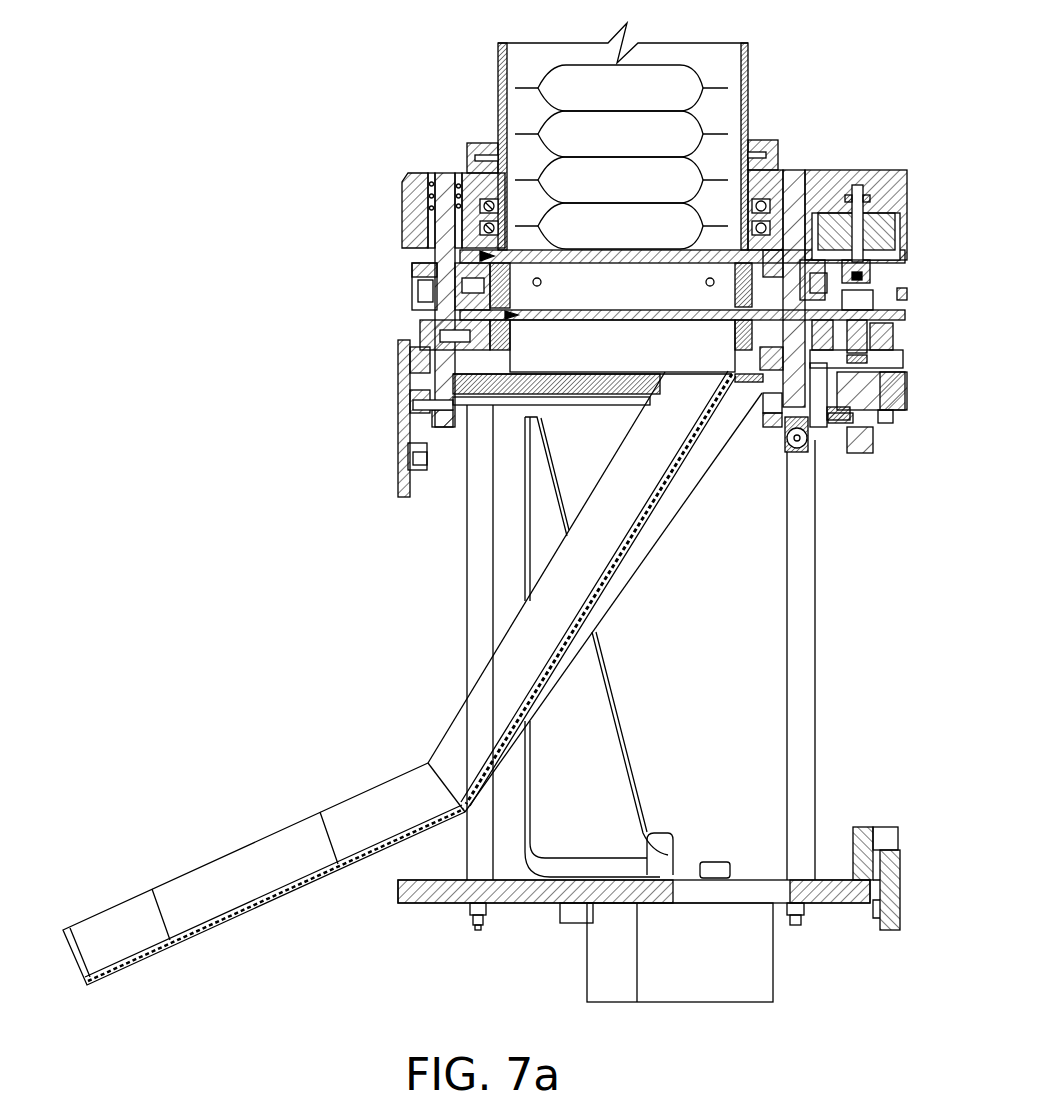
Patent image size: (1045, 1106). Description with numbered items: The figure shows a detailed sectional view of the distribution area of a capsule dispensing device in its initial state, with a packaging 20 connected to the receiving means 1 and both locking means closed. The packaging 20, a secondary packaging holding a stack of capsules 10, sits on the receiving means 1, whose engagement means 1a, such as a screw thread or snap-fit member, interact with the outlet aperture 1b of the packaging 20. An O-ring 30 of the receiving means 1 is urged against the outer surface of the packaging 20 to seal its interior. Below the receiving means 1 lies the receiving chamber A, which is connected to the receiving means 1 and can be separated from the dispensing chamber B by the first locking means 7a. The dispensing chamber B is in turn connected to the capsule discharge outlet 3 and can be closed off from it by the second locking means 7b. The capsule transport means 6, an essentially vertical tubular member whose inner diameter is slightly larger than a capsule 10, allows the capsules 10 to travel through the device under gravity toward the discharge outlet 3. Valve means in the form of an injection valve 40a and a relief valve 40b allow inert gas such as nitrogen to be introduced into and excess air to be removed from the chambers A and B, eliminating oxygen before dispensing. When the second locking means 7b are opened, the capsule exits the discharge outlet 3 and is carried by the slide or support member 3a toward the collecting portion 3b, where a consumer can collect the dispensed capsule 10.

The capsule 10 is at (684, 62).
The packaging 20 is at (748, 100).
The receiving means 1 is at (465, 175).
The engagement means 1a is at (780, 158).
The outlet aperture 1b is at (483, 145).
The O-ring 30 is at (462, 205).
The first locking means 7a is at (403, 215).
The second locking means 7b is at (405, 375).
The injection valve 40a is at (480, 256).
The relief valve 40b is at (710, 288).
The receiving chamber A is at (745, 237).
The dispensing chamber B is at (472, 306).
The capsule transport means 6 is at (510, 317).
The capsule discharge outlet 3 is at (550, 352).
The support member 3a is at (647, 543).
The collecting portion 3b is at (108, 958).